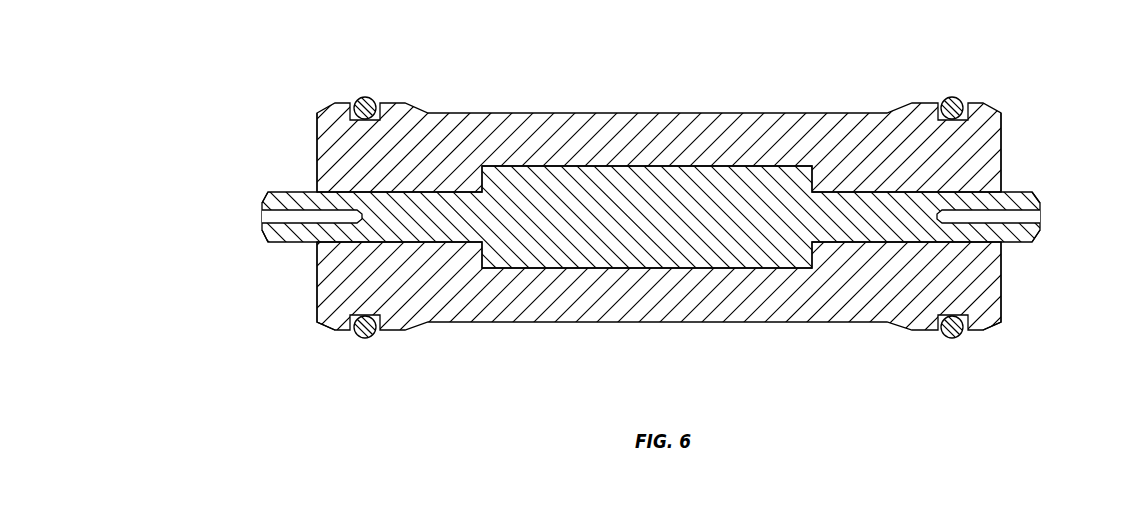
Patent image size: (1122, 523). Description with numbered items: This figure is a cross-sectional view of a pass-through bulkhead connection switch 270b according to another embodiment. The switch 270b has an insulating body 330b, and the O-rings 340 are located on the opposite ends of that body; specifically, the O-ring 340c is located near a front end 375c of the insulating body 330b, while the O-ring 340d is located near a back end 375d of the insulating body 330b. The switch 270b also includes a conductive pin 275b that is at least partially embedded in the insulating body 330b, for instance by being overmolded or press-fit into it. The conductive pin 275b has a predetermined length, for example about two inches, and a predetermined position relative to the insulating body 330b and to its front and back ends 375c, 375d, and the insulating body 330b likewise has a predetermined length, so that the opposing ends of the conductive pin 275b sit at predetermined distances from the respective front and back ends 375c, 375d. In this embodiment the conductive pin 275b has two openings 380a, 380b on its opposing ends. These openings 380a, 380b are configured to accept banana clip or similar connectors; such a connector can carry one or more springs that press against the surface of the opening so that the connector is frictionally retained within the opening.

The pass-through bulkhead connection switch 270b is at (656, 220).
The insulating body 330b is at (502, 125).
The conductive pin 275b is at (632, 165).
The opening 380b is at (305, 210).
The opening 380a is at (1005, 243).
The back end 375d is at (317, 283).
The front end 375c is at (1002, 302).
The O-ring 340d is at (372, 338).
The O-ring 340c is at (950, 337).
The O-rings 340 is at (658, 252).